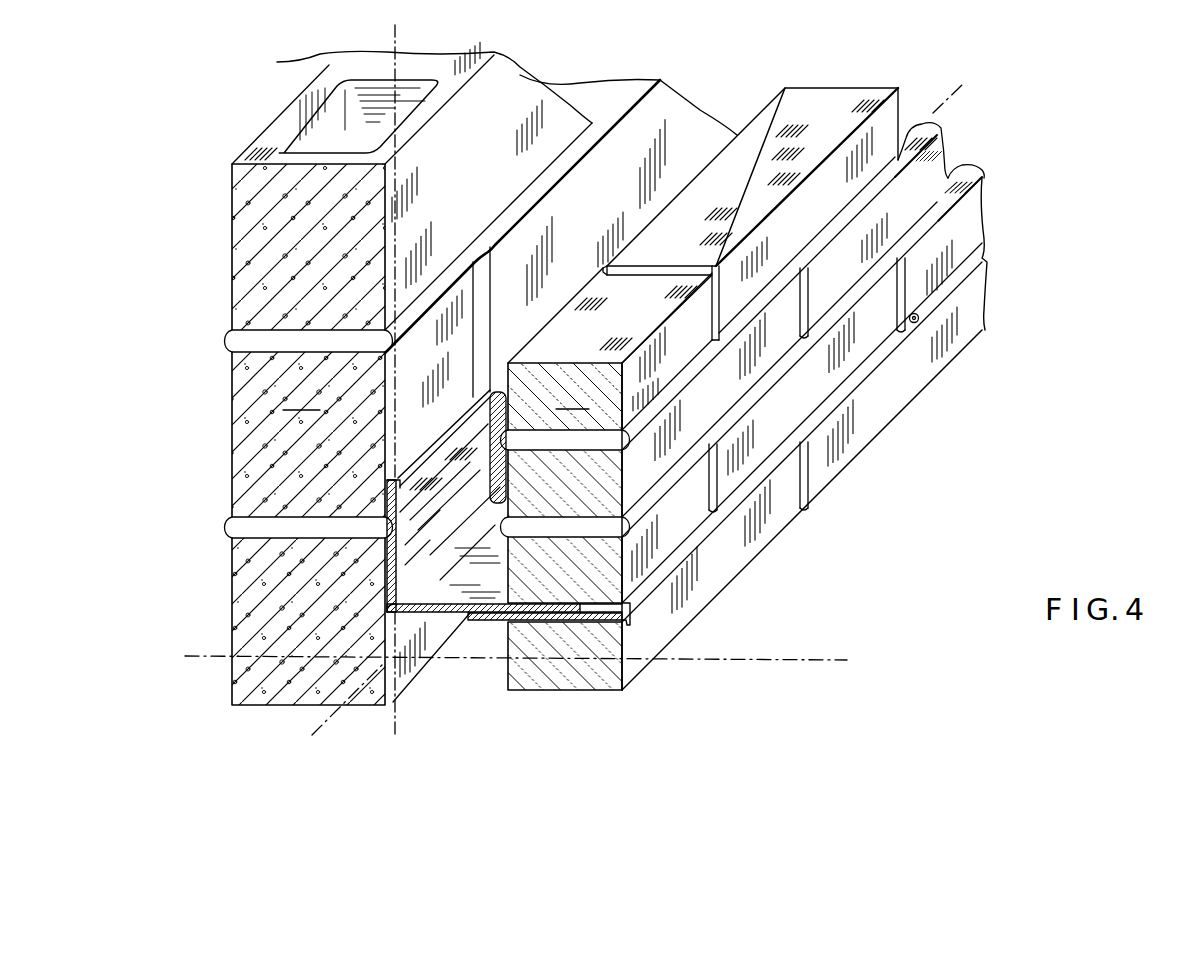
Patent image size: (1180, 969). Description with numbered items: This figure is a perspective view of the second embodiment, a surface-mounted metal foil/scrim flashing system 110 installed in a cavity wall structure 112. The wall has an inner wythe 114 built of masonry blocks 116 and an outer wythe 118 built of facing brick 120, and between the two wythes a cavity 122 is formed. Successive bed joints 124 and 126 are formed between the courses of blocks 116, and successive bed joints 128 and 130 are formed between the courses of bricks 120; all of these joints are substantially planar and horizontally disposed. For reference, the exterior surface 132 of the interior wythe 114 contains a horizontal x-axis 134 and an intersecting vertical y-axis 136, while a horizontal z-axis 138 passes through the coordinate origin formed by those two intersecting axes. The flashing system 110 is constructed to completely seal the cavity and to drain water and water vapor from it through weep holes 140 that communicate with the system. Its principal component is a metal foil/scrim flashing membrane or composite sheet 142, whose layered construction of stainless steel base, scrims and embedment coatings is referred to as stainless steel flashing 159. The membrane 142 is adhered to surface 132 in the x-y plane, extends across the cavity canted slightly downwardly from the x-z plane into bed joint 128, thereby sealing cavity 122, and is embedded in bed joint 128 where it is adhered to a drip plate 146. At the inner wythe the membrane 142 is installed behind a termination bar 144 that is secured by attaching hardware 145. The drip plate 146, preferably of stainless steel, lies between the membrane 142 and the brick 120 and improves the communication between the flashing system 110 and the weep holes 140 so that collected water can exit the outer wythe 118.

The metal foil/scrim flashing system 110 is at (573, 521).
The cavity wall structure 112 is at (698, 85).
The inner wythe 114 is at (513, 97).
The masonry block 116 is at (379, 373).
The outer wythe 118 is at (896, 113).
The facing brick 120 is at (607, 479).
The cavity 122 is at (737, 135).
The bed joint 124 is at (245, 526).
The bed joint 126 is at (240, 340).
The bed joint 128 is at (700, 537).
The bed joint 130 is at (952, 202).
The exterior surface 132 is at (388, 680).
The x-axis 134 is at (326, 726).
The y-axis 136 is at (330, 54).
The z-axis 138 is at (200, 656).
The weep hole 140 is at (628, 614).
The metal foil/scrim flashing membrane 142 is at (300, 549).
The termination bar 144 is at (400, 483).
The attaching hardware 145 is at (392, 506).
The drip plate 146 is at (562, 624).
The stainless steel flashing 159 is at (455, 465).